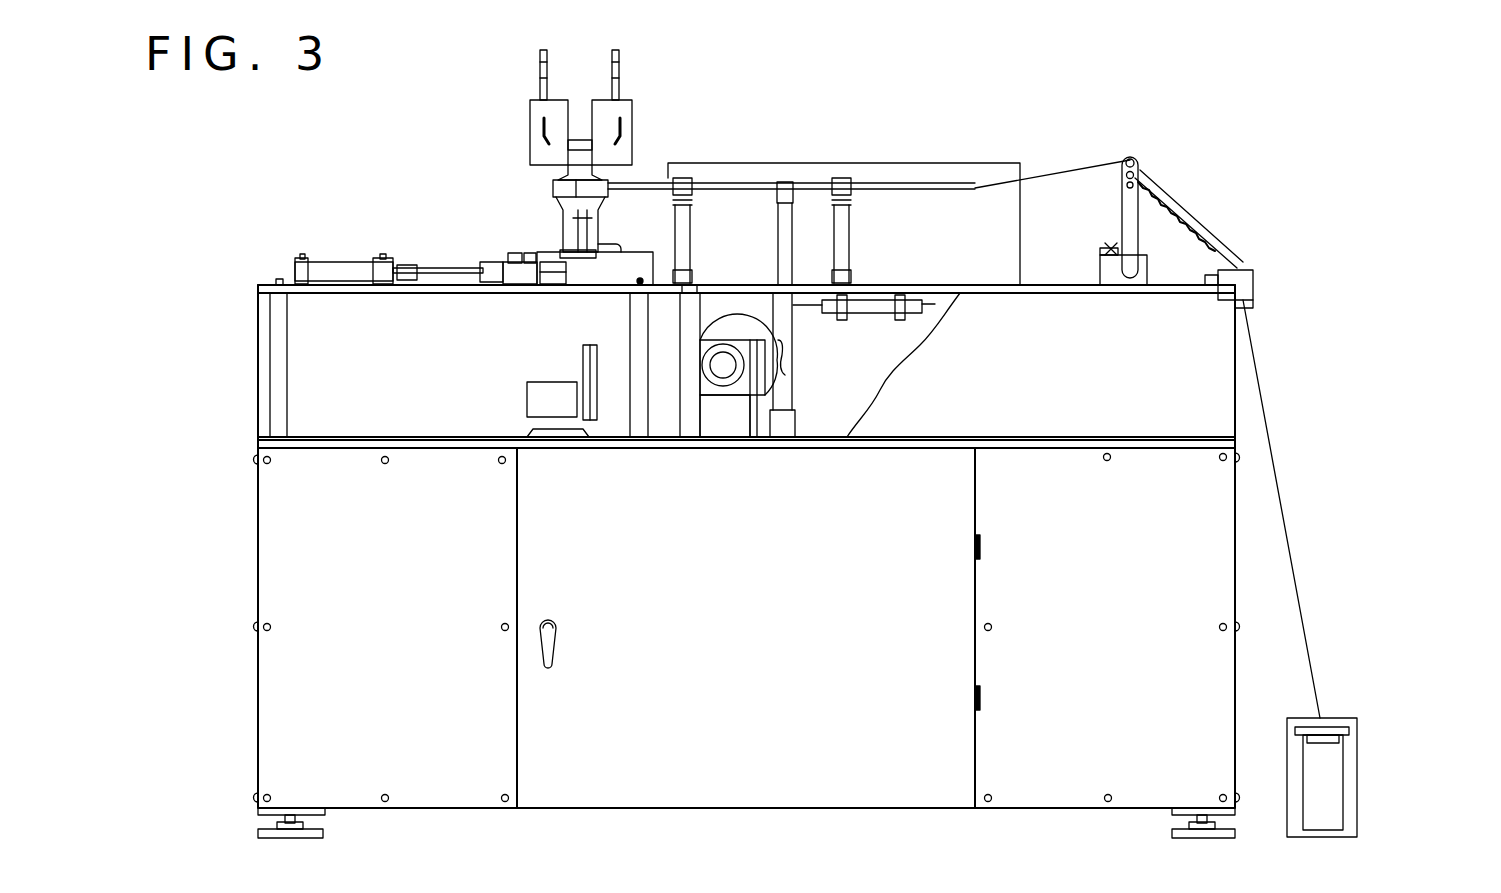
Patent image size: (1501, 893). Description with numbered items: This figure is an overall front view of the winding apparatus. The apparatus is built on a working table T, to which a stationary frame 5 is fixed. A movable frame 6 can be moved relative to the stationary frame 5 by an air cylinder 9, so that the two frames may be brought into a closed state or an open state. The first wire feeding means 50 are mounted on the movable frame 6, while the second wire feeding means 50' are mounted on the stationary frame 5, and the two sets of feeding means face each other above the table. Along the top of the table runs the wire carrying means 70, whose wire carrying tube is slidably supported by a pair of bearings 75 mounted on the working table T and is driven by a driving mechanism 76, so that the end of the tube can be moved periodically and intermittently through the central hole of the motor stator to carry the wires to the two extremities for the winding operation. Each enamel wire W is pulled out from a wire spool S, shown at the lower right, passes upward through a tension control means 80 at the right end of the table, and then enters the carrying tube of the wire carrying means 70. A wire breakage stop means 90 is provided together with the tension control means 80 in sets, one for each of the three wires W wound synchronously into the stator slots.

The stationary frame 5 is at (598, 232).
The movable frame 6 is at (560, 235).
The air cylinder 9 is at (345, 262).
The first wire feeding means 50 is at (480, 106).
The second wire feeding means 50' is at (656, 86).
The wire carrying means 70 is at (740, 178).
The bearings 75 is at (680, 178).
The driving mechanism 76 is at (800, 250).
The tension control means 80 is at (1142, 170).
The wire breakage stop means 90 is at (1110, 252).
The working table T is at (740, 275).
The enamel wires W is at (1085, 162).
The wire spool S is at (1325, 760).